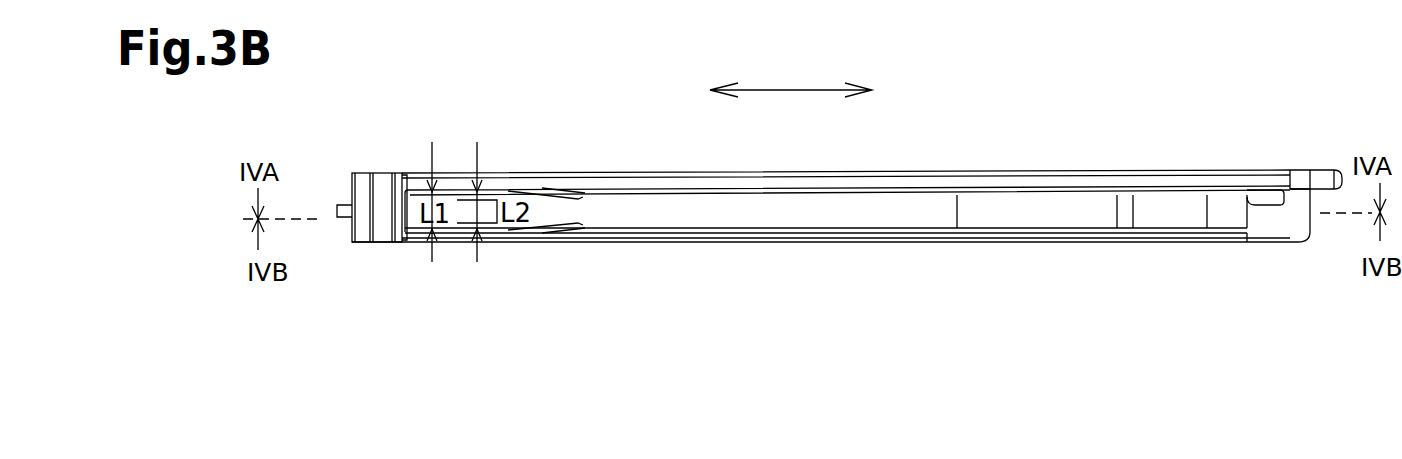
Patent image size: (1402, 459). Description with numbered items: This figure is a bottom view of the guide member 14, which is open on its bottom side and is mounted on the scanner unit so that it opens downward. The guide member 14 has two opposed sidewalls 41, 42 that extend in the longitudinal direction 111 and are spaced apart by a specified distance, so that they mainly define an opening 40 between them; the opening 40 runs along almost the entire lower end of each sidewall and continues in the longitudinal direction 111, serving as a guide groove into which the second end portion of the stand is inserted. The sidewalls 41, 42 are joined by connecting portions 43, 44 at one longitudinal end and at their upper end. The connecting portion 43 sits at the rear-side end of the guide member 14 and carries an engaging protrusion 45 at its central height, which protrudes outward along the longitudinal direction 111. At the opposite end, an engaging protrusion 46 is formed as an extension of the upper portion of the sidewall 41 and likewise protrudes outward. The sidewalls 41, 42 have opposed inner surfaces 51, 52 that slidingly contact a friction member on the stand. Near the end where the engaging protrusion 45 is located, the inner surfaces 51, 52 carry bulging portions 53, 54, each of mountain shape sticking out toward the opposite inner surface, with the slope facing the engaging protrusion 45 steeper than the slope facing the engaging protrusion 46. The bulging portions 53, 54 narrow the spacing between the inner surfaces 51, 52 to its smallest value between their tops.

The guide member 14 is at (707, 318).
The opening 40 is at (919, 234).
The sidewall 41 is at (1001, 172).
The sidewall 42 is at (1010, 243).
The connecting portion 43 is at (394, 205).
The connecting portion 44 is at (1089, 212).
The engaging protrusion 45 is at (336, 206).
The engaging protrusion 46 is at (1330, 171).
The inner surface 51 is at (900, 193).
The inner surface 52 is at (864, 229).
The bulging portion 53 is at (558, 203).
The bulging portion 54 is at (552, 224).
The longitudinal direction 111 is at (795, 90).